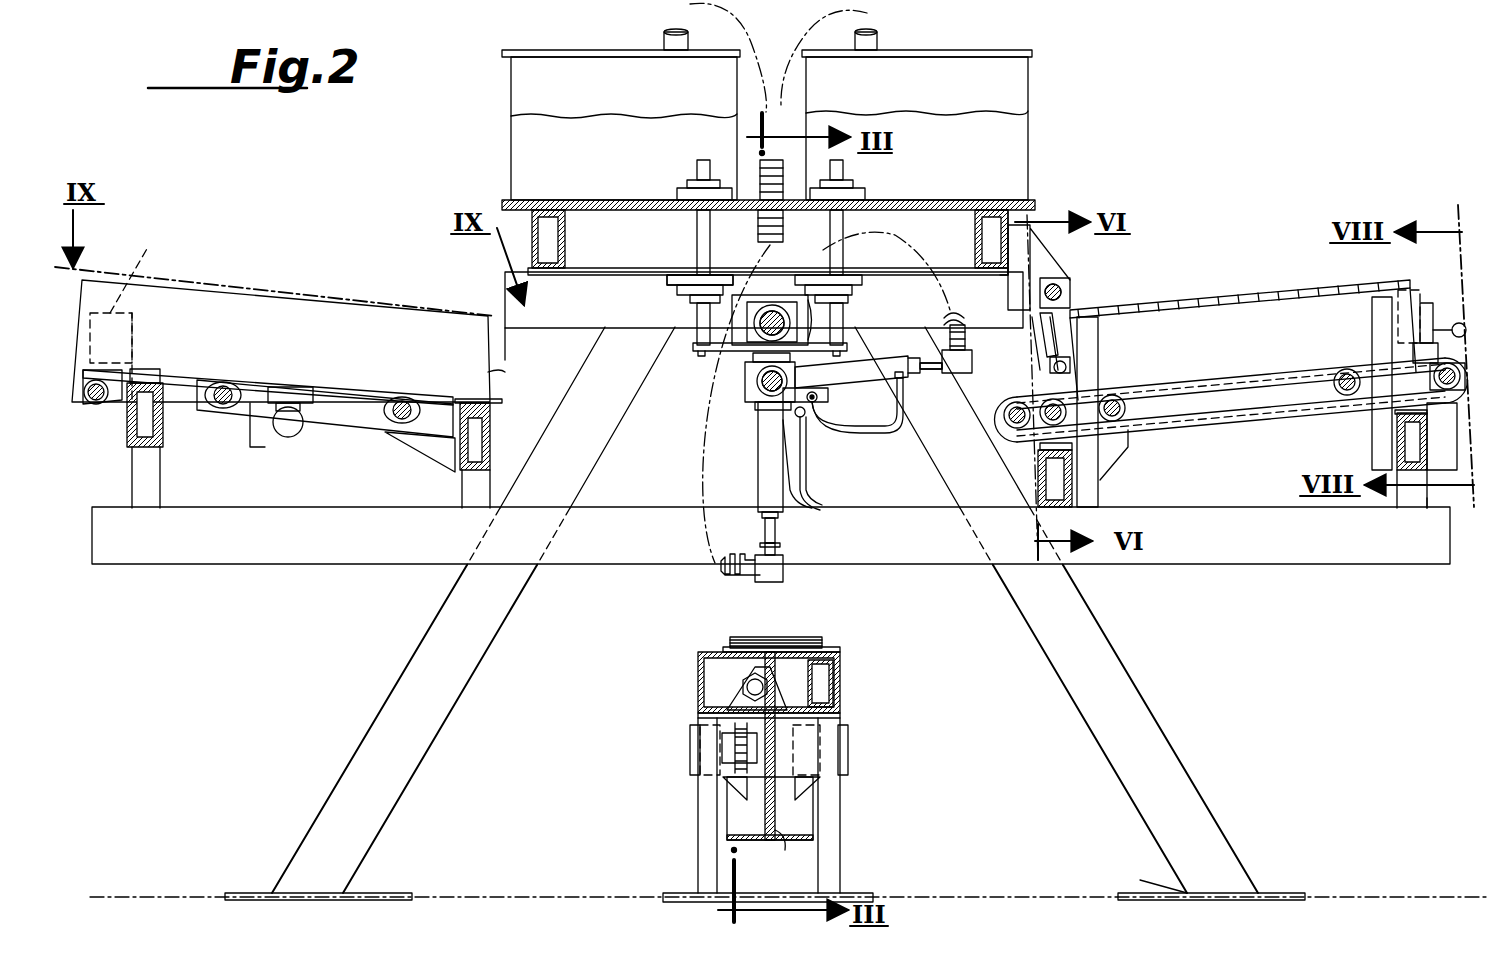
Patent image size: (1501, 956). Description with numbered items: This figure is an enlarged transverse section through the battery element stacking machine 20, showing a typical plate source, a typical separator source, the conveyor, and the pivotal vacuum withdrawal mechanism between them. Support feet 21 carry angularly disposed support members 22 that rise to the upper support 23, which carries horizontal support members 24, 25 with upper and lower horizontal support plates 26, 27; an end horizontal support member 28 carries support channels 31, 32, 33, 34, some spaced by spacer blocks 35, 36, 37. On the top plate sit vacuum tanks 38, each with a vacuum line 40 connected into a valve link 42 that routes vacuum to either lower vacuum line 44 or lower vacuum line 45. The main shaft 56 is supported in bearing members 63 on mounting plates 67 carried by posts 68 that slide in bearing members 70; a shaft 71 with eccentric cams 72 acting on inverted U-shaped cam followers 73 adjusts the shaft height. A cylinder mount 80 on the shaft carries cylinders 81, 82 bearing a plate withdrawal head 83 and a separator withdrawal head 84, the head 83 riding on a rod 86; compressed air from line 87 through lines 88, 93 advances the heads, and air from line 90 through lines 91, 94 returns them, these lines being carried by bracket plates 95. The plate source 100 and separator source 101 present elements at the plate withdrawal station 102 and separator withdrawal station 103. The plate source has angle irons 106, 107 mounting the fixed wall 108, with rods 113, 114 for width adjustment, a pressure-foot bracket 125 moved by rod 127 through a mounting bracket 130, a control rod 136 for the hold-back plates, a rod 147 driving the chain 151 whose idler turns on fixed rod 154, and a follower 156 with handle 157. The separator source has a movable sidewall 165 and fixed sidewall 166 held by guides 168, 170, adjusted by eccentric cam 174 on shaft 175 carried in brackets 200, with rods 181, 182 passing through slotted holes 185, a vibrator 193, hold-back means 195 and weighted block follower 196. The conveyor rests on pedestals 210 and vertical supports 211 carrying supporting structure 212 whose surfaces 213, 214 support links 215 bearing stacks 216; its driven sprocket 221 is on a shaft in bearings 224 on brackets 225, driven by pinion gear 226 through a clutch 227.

The machine 20 is at (1218, 773).
The support feet 21 is at (368, 893).
The angularly disposed support members 22 is at (325, 783).
The upper support 23 is at (896, 290).
The horizontal support member 24 is at (1030, 205).
The horizontal support member 25 is at (566, 250).
The upper horizontal support plate 26 is at (948, 200).
The lower horizontal support plate 27 is at (950, 268).
The horizontal support member 28 is at (1268, 548).
The support channel 31 is at (1420, 482).
The support channel 32 is at (1075, 490).
The support channel 33 is at (488, 445).
The support channel 34 is at (138, 440).
The spacer block 35 is at (1428, 500).
The spacer block 36 is at (468, 490).
The spacer block 37 is at (158, 485).
The vacuum tank 38 is at (1018, 75).
The vacuum line 40 is at (880, 42).
The valve link 42 is at (785, 205).
The lower vacuum line 44 is at (948, 328).
The lower vacuum line 45 is at (740, 555).
The main shaft 56 is at (762, 390).
The bearing member 63 is at (745, 375).
The mounting plate 67 is at (700, 346).
The post 68 is at (700, 170).
The bearing member 70 is at (685, 278).
The shaft 71 is at (762, 322).
The eccentric cam 72 is at (790, 318).
The cam follower 73 is at (771, 295).
The cylinder mount 80 is at (752, 396).
The cylinder 81 is at (883, 362).
The cylinder 82 is at (768, 483).
The plate element withdrawal head 83 is at (973, 362).
The separator element withdrawal head 84 is at (775, 565).
The rod 86 is at (928, 372).
The air line 87 is at (818, 400).
The air line 88 is at (870, 400).
The air line 90 is at (800, 410).
The air line 91 is at (905, 430).
The air line 93 is at (805, 415).
The return delivery line 94 is at (800, 500).
The bracket plate 95 is at (790, 445).
The battery plate source 100 is at (1285, 282).
The separator source 101 is at (258, 278).
The battery plate withdrawal station 102 is at (1078, 343).
The separator plate withdrawal station 103 is at (508, 362).
The angle iron 106 is at (1380, 325).
The angle iron 107 is at (1098, 368).
The fixed wall 108 is at (1228, 318).
The rod 113 is at (1300, 405).
The rod 114 is at (1120, 410).
The bracket 125 is at (1075, 312).
The rod 127 is at (1066, 287).
The mounting bracket 130 is at (1032, 255).
The control rod 136 is at (1040, 440).
The rod 147 is at (1400, 395).
The chain 151 is at (1240, 378).
The fixed rod 154 is at (1010, 410).
The follower 156 is at (1422, 305).
The handle 157 is at (1458, 322).
The longitudinally movable sidewall 165 is at (262, 405).
The longitudinally fixed sidewall 166 is at (330, 295).
The inboard guide 168 is at (478, 400).
The outboard guide 170 is at (160, 372).
The eccentric cam 174 is at (98, 405).
The shaft 175 is at (103, 368).
The rod 181 is at (403, 425).
The rod 182 is at (228, 390).
The slotted hole 185 is at (272, 384).
The vibrator 193 is at (296, 425).
The hold-back means 195 is at (490, 376).
The weighted block follower 196 is at (140, 262).
The mounting bracket 200 is at (193, 418).
The pedestal 210 is at (868, 893).
The vertical support member 211 is at (830, 852).
The horizontal supporting structure 212 is at (842, 697).
The upper surface portion 213 is at (718, 652).
The upper surface portion 214 is at (842, 650).
The conveyor link 215 is at (812, 640).
The stack 216 is at (760, 637).
The driven sprocket 221 is at (778, 840).
The anti-friction bearing 224 is at (697, 733).
The bracket 225 is at (822, 762).
The pinion gear 226 is at (735, 803).
The clutch 227 is at (750, 748).